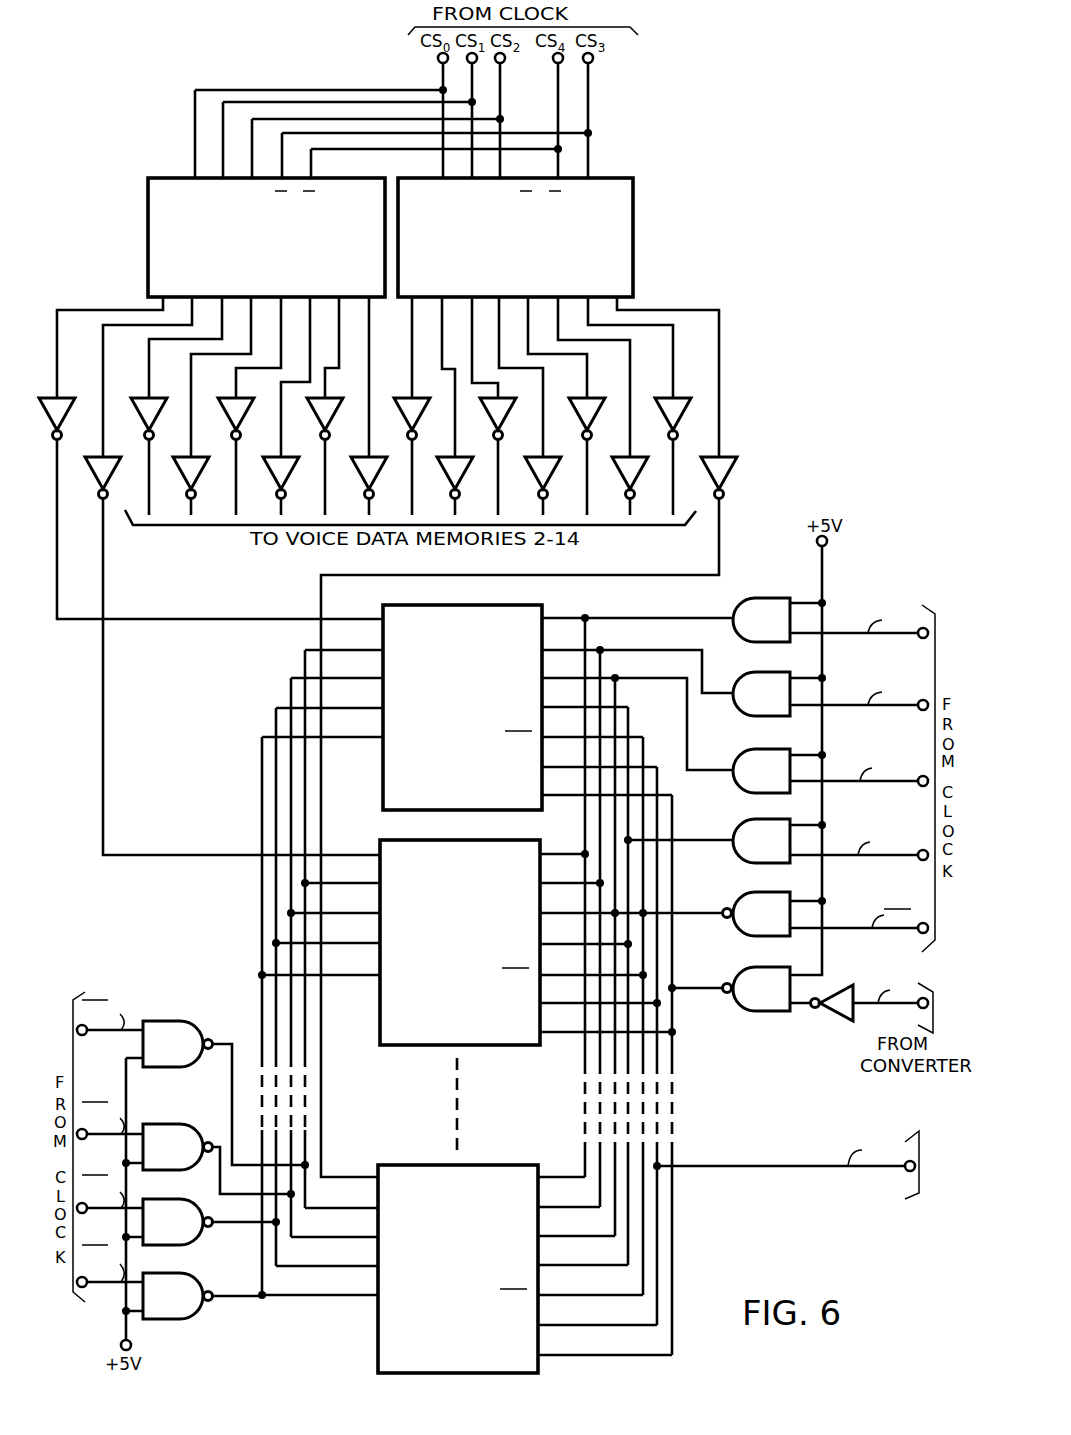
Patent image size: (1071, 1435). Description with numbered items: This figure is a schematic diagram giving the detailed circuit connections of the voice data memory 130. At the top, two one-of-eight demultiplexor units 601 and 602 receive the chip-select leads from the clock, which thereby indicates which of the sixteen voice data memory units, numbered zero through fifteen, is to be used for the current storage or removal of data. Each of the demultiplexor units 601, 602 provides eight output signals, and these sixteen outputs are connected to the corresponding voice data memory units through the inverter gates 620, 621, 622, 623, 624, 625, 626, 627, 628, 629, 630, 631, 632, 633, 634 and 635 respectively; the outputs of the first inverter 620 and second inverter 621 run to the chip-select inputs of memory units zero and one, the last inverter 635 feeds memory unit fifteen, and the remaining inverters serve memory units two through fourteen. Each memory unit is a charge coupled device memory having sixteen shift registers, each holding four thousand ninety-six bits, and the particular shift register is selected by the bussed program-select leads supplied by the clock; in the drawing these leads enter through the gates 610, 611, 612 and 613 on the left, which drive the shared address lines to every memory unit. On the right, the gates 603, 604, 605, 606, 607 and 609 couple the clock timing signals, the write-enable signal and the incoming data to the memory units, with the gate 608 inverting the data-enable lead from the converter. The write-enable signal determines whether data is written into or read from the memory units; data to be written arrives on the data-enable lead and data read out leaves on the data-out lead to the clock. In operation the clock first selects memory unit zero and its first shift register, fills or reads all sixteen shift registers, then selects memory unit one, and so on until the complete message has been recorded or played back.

The voice data memory 130 is at (593, 989).
The one-of-eight demultiplexor unit 601 is at (370, 180).
The one-of-eight demultiplexor unit 602 is at (515, 194).
The AND gate (phase 1) 603 is at (750, 598).
The AND gate (phase 2) 604 is at (750, 672).
The AND gate (T phase 1) 605 is at (750, 749).
The AND gate (T phase 2) 606 is at (750, 819).
The NAND gate (write enable) 607 is at (750, 892).
The inverter (data enable) 608 is at (827, 990).
The NAND gate (data input) 609 is at (750, 967).
The NAND gate (PS0 address) 610 is at (180, 1021).
The NAND gate (PS1 address) 611 is at (172, 1125).
The NAND gate (PS2 address) 612 is at (166, 1201).
The NAND gate (PS3 address) 613 is at (170, 1275).
The inverter gate 620 is at (92, 392).
The inverter gate 621 is at (139, 451).
The inverter gate 622 is at (184, 392).
The inverter gate 623 is at (227, 451).
The inverter gate 624 is at (271, 392).
The inverter gate 625 is at (317, 451).
The inverter gate 626 is at (360, 392).
The inverter gate 627 is at (405, 451).
The inverter gate 628 is at (447, 392).
The inverter gate 629 is at (491, 451).
The inverter gate 630 is at (533, 392).
The inverter gate 631 is at (579, 451).
The inverter gate 632 is at (622, 392).
The inverter gate 633 is at (667, 451).
The inverter gate 634 is at (708, 392).
The inverter gate 635 is at (755, 451).